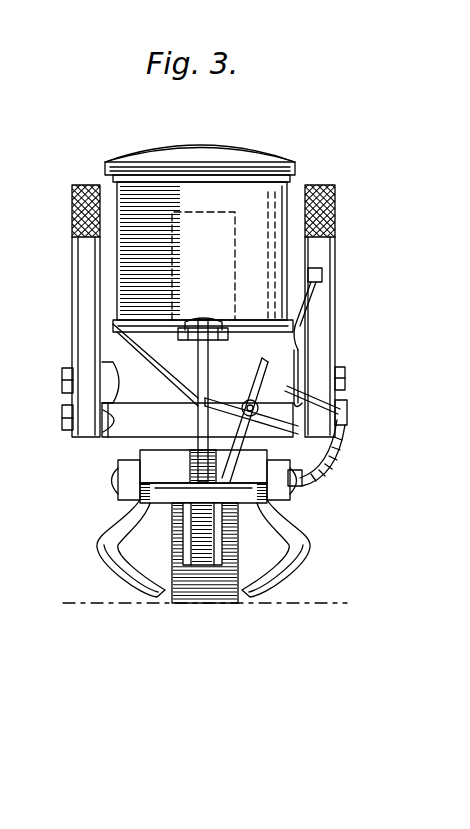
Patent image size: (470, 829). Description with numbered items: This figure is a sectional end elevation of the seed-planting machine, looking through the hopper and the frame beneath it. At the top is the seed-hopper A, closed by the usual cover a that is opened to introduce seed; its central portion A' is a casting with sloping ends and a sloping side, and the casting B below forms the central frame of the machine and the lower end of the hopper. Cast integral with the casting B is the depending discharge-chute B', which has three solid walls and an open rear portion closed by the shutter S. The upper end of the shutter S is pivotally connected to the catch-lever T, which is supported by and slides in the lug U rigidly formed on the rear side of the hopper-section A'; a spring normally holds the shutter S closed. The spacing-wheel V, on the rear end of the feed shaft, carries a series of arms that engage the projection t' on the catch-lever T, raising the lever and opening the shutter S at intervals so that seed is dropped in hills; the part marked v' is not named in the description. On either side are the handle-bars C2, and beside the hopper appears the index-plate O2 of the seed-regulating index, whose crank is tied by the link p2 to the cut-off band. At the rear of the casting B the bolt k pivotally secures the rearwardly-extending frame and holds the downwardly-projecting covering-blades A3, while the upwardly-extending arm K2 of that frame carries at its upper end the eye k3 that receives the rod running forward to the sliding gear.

The cover a is at (262, 160).
The seed-hopper A is at (203, 257).
The handle-bars C2 is at (72, 257).
The index-plate O2 is at (322, 276).
The catch-lever T is at (203, 322).
The lug U is at (228, 335).
The central portion of the hopper A' is at (104, 365).
The projection t' is at (178, 437).
The spacing-wheel V is at (245, 417).
The arm v' is at (251, 401).
The link p2 is at (302, 358).
The eye k3 is at (347, 411).
The upwardly-extending arm K2 is at (328, 454).
The bolt k is at (302, 478).
The casting B is at (162, 466).
The discharge-chute B' is at (155, 507).
The covering-blades A3 is at (100, 548).
The shutter S is at (176, 600).